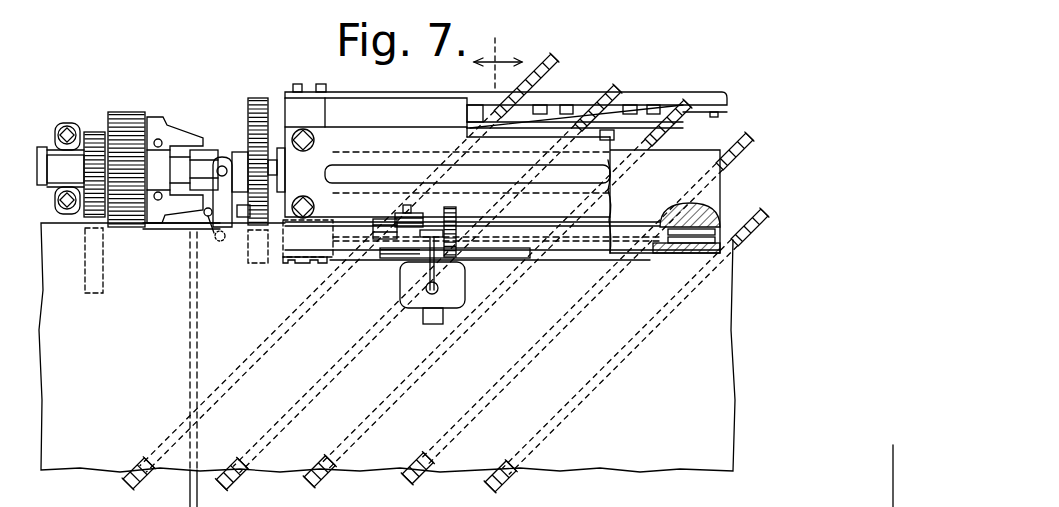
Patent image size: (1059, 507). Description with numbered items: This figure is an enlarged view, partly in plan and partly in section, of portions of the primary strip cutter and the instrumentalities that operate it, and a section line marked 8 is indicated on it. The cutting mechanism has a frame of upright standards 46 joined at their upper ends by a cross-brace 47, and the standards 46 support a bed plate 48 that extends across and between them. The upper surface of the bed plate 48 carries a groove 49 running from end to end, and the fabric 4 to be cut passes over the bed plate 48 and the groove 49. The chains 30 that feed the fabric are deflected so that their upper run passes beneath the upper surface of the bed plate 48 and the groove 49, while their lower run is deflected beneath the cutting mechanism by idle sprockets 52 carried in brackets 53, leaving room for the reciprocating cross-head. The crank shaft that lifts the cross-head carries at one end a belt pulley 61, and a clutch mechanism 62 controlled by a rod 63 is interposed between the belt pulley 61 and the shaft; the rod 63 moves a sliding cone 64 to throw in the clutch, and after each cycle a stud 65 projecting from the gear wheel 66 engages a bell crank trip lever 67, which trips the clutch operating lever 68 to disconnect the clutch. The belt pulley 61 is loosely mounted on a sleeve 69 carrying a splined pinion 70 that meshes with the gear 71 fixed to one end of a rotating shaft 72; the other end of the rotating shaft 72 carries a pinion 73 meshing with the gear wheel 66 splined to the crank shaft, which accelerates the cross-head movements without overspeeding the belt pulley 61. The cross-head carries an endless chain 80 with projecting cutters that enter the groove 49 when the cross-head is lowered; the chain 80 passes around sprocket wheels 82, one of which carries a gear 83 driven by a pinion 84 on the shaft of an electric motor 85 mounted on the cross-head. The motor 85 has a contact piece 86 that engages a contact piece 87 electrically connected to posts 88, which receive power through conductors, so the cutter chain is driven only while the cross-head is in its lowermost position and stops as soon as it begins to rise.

The fabric 4 is at (733, 430).
The section arrow 8 is at (498, 56).
The chains 30 is at (607, 95).
The upright standards 46 is at (502, 173).
The cross-brace 47 is at (467, 182).
The bed plate 48 is at (664, 195).
The groove 49 is at (715, 232).
The idle sprockets 52 is at (478, 106).
The brackets 53 is at (576, 116).
The belt pulley 61 is at (130, 112).
The clutch mechanism 62 is at (180, 142).
The rod 63 is at (188, 492).
The sliding cone 64 is at (205, 148).
The stud 65 is at (242, 219).
The gear wheel 66 is at (258, 96).
The bell crank trip lever 67 is at (205, 230).
The clutch operating lever 68 is at (212, 206).
The sleeve 69 is at (240, 150).
The pinion 70 is at (92, 130).
The gear 71 is at (95, 223).
The rotating shaft 72 is at (160, 231).
The pinion 73 is at (260, 265).
The endless chain 80 is at (672, 253).
The sprocket wheels 82 is at (405, 210).
The gear 83 is at (388, 260).
The pinion 84 is at (462, 246).
The electric motor 85 is at (420, 310).
The contact piece 86 is at (380, 228).
The contact piece 87 is at (470, 230).
The posts 88 is at (305, 501).